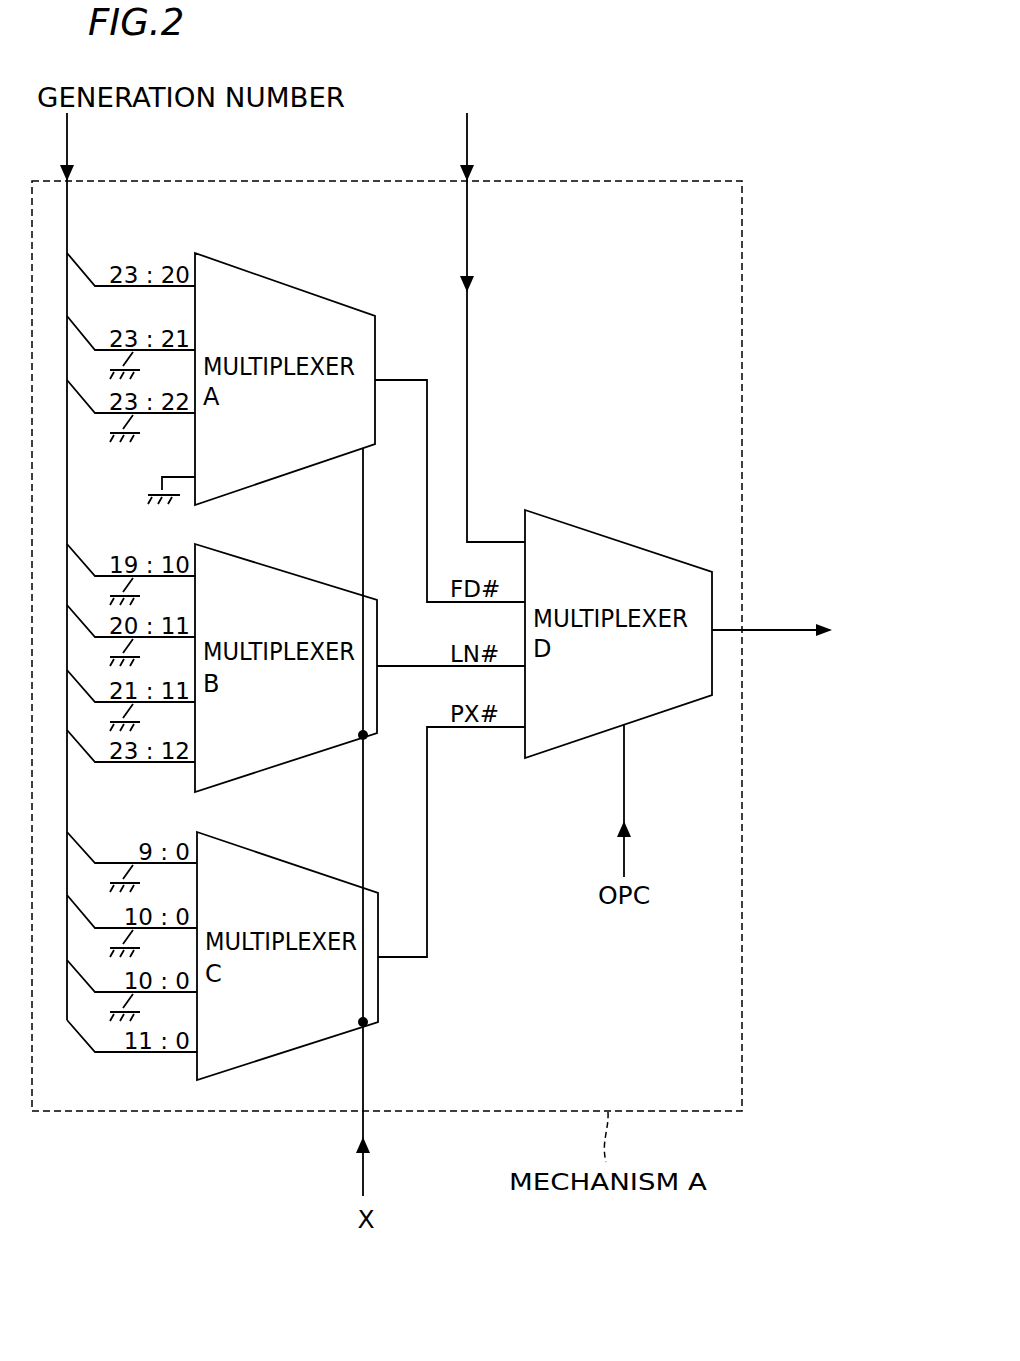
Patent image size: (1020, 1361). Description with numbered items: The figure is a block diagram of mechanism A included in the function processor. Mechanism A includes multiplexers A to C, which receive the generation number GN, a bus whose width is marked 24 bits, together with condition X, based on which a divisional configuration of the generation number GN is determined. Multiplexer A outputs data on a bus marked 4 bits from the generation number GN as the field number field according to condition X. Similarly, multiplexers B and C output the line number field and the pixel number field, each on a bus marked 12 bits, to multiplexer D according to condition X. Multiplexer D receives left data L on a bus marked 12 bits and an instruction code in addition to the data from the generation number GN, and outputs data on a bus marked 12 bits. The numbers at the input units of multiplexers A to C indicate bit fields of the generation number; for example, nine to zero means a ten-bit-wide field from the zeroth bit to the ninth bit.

The 24-bit generation number bus GN 24 is at (58, 212).
The 4-bit output bus of multiplexer A 4 is at (394, 389).
The 12-bit bus 12 is at (461, 390).